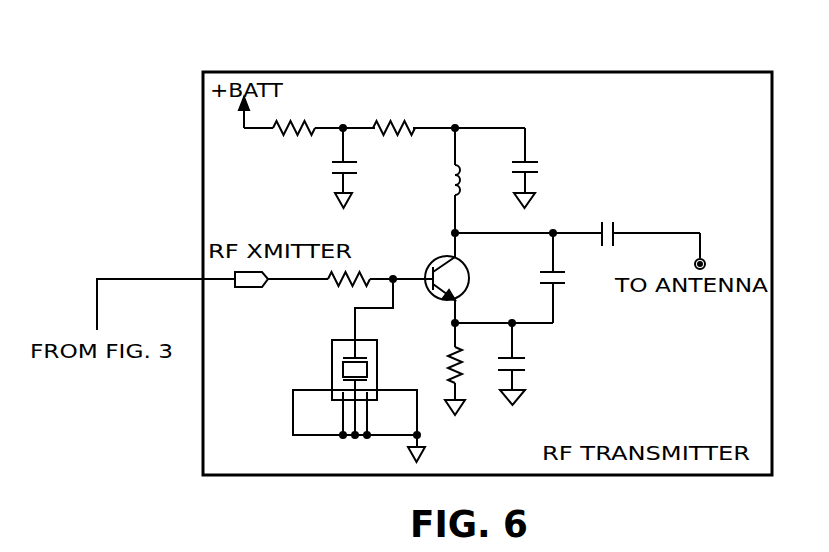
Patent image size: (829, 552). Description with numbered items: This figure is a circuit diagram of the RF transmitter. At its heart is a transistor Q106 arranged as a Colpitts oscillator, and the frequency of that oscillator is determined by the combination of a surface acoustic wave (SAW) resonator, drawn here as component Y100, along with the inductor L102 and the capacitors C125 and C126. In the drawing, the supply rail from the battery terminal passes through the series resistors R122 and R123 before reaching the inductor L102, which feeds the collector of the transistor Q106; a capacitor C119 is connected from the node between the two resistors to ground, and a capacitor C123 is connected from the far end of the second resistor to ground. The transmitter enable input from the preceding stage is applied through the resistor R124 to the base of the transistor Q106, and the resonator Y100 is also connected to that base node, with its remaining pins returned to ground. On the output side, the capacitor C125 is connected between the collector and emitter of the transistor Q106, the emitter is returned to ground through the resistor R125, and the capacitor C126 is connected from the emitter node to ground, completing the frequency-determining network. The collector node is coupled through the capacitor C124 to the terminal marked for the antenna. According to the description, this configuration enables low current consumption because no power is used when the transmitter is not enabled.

The resistor R122 is at (313, 126).
The resistor R123 is at (411, 126).
The capacitor C119 is at (336, 177).
The inductor L102 is at (452, 180).
The capacitor C123 is at (535, 160).
The coupling capacitor to antenna C124 is at (615, 226).
The transistor Q106 is at (470, 270).
The resistor R124 is at (333, 289).
The capacitor C125 is at (560, 286).
The emitter resistor R125 is at (446, 363).
The capacitor C126 is at (521, 376).
The crystal / SAW resonator Y100 is at (332, 365).